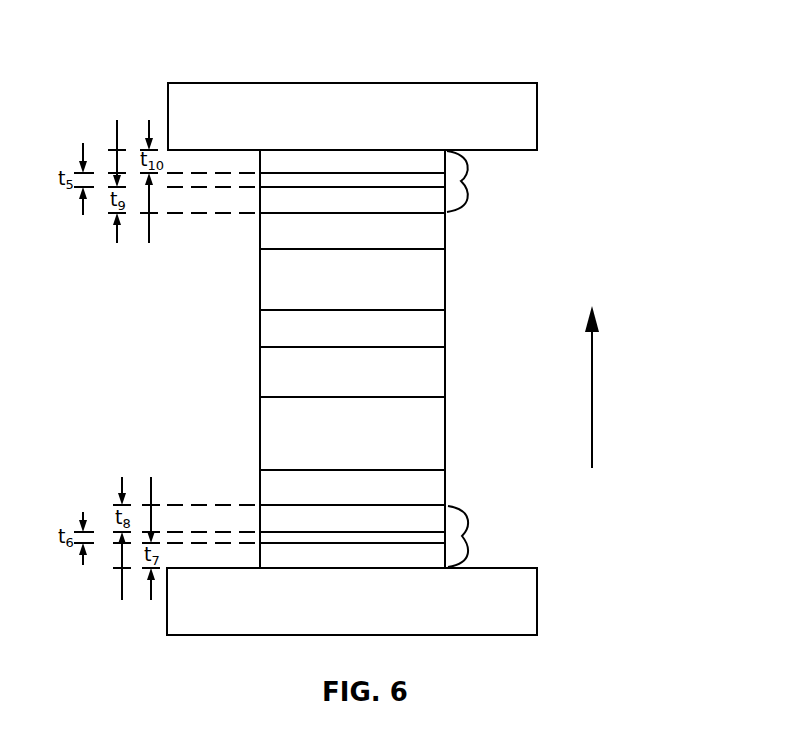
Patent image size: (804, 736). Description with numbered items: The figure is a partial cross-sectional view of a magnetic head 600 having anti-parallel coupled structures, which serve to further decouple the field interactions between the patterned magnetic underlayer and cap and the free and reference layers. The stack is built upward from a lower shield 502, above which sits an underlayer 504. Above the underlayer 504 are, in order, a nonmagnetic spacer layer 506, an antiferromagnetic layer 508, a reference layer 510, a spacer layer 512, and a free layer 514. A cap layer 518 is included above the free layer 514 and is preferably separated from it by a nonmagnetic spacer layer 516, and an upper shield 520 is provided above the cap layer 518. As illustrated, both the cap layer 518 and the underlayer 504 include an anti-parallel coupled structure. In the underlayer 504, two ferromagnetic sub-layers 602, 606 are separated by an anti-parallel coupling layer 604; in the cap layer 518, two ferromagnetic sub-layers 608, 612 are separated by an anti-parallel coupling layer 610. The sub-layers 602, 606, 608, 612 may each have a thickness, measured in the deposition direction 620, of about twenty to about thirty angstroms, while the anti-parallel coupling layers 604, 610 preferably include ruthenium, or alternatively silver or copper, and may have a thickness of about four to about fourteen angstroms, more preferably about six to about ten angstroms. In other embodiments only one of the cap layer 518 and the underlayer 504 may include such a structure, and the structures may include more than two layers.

The magnetic head 600 is at (567, 38).
The ferromagnetic sub-layer 602 is at (425, 568).
The anti-parallel coupling layer 604 is at (282, 531).
The ferromagnetic sub-layer 606 is at (424, 505).
The ferromagnetic sub-layer 608 is at (422, 214).
The anti-parallel coupling layer 610 is at (284, 188).
The ferromagnetic sub-layer 612 is at (272, 150).
The deposition direction 620 is at (592, 398).
The lower shield 502 is at (337, 617).
The underlayer 504 is at (386, 536).
The nonmagnetic spacer layer 506 is at (337, 501).
The antiferromagnetic (AFM) layer 508 is at (337, 447).
The reference layer 510 is at (337, 383).
The spacer layer 512 is at (337, 339).
The free layer 514 is at (337, 291).
The nonmagnetic spacer layer 516 is at (337, 242).
The cap layer 518 is at (388, 181).
The upper shield 520 is at (337, 129).